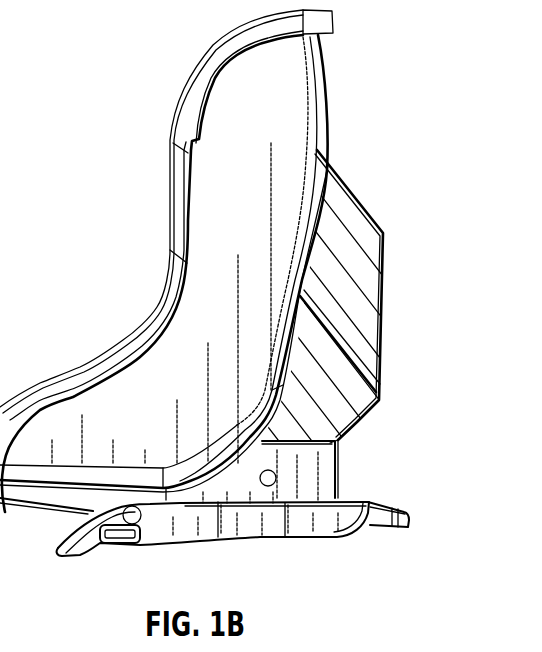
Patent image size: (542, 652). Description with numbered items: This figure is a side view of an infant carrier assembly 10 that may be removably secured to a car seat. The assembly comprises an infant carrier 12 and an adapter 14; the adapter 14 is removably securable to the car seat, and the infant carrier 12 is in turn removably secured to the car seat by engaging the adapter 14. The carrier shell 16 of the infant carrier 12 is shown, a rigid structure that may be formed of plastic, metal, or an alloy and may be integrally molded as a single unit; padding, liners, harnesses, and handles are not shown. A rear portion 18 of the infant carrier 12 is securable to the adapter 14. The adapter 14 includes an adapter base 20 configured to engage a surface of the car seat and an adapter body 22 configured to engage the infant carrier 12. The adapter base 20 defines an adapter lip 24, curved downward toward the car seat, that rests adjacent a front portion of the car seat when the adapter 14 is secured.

The infant carrier assembly 10 is at (258, 311).
The infant carrier 12 is at (353, 184).
The adapter 14 is at (251, 556).
The carrier shell 16 is at (327, 113).
The rear portion 18 is at (374, 424).
The adapter base 20 is at (410, 501).
The adapter body 22 is at (360, 435).
The adapter lip 24 is at (120, 561).